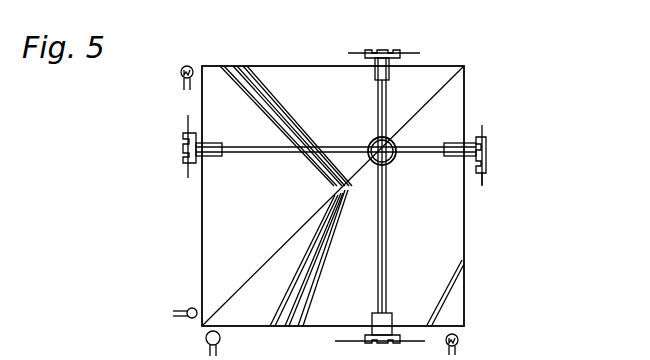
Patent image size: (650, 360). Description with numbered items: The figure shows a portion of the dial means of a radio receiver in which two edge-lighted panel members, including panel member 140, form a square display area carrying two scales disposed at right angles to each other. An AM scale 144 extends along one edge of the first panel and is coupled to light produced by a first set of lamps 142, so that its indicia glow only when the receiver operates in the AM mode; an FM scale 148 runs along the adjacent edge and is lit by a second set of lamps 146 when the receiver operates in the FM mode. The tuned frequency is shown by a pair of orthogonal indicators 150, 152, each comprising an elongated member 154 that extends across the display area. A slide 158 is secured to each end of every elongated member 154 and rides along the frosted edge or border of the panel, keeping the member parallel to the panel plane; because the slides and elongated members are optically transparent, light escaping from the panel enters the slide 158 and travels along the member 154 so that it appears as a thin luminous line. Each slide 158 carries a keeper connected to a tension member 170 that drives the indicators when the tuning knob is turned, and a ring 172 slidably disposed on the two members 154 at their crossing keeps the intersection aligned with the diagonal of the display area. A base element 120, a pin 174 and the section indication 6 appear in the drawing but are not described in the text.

The base 120 is at (345, 342).
The panel member 140 is at (455, 230).
The first set of lamps 142 is at (459, 341).
The AM scale 144 is at (452, 300).
The second set of lamps 146 is at (190, 66).
The FM scale 148 is at (232, 90).
The indicator 150 is at (377, 262).
The indicator 152 is at (270, 152).
The elongated member 154 is at (346, 147).
The slide 158 is at (480, 135).
The tension member 170 is at (484, 176).
The ring 172 is at (400, 145).
The pin 174 is at (186, 131).
The section line 6 is at (170, 148).